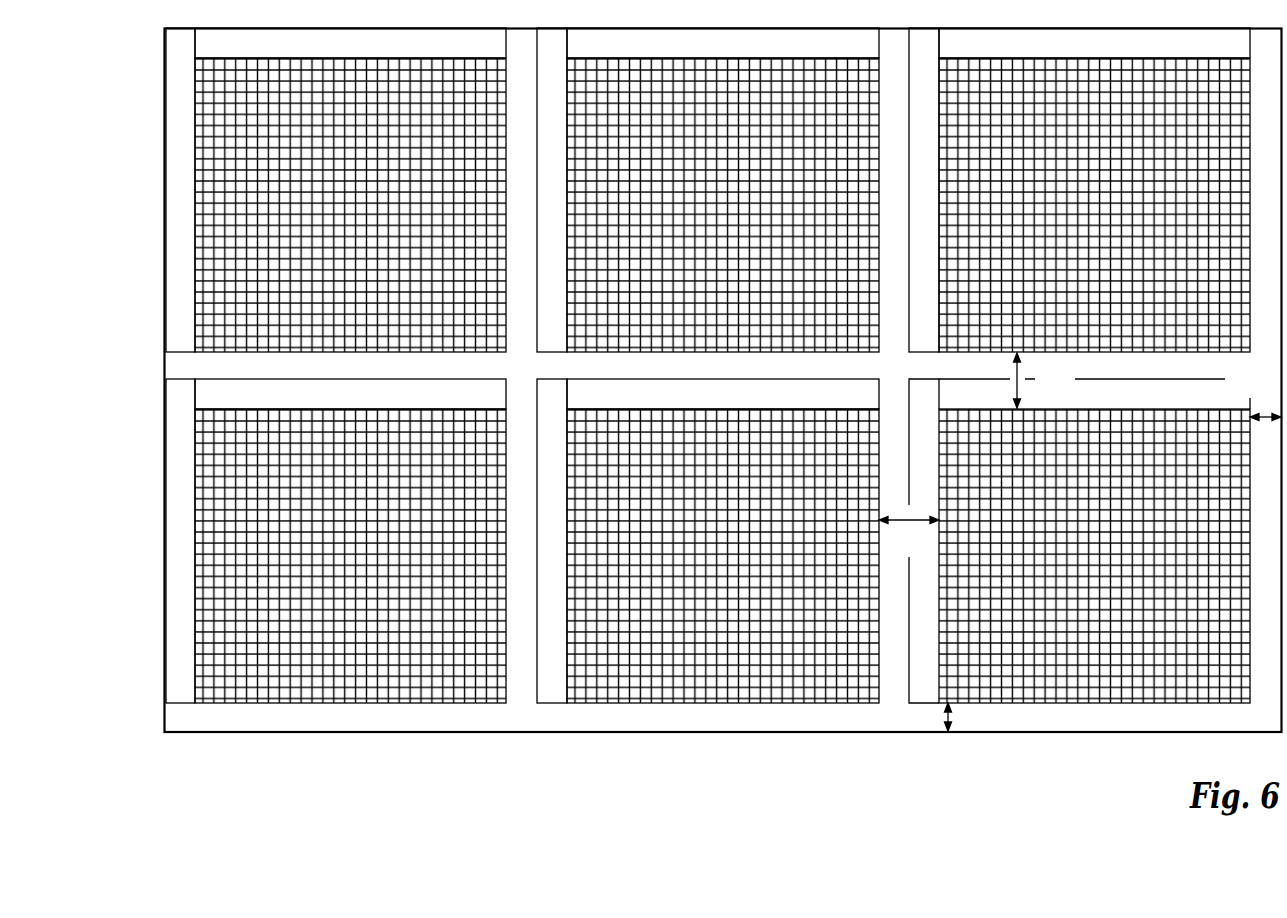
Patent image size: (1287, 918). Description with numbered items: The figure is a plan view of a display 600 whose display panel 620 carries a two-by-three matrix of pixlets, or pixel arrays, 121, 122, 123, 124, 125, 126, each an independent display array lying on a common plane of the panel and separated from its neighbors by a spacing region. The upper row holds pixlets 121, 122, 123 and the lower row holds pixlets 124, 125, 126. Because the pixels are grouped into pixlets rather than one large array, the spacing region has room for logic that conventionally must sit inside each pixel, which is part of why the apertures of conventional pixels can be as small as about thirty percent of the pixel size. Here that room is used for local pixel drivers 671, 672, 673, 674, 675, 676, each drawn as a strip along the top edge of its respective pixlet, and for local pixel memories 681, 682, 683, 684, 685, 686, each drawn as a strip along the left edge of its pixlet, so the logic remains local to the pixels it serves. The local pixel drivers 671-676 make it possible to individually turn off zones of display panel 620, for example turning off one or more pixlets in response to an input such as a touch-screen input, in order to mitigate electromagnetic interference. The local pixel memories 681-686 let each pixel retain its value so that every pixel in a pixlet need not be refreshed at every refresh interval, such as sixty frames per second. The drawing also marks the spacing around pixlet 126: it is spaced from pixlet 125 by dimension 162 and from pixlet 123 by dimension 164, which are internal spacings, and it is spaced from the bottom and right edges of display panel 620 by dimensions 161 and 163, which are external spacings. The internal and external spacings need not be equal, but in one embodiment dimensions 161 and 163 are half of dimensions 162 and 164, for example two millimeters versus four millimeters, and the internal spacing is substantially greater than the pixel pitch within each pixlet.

The pixlet 121 is at (370, 216).
The pixlet 122 is at (739, 216).
The pixlet 123 is at (1111, 229).
The pixlet 124 is at (359, 581).
The pixlet 125 is at (739, 581).
The pixlet 126 is at (1126, 573).
The dimension 161 is at (946, 720).
The dimension 162 is at (914, 525).
The dimension 163 is at (1266, 412).
The dimension 164 is at (1039, 378).
The display 600 is at (723, 418).
The display panel 620 is at (1152, 718).
The pixel driver 671 is at (450, 52).
The pixel driver 672 is at (822, 52).
The pixel driver 673 is at (1194, 52).
The pixel driver 674 is at (450, 404).
The pixel driver 675 is at (822, 404).
The pixel driver 676 is at (1134, 404).
The pixel memory 681 is at (190, 80).
The pixel memory 682 is at (562, 80).
The pixel memory 683 is at (934, 80).
The pixel memory 684 is at (190, 431).
The pixel memory 685 is at (562, 431).
The pixel memory 686 is at (934, 565).